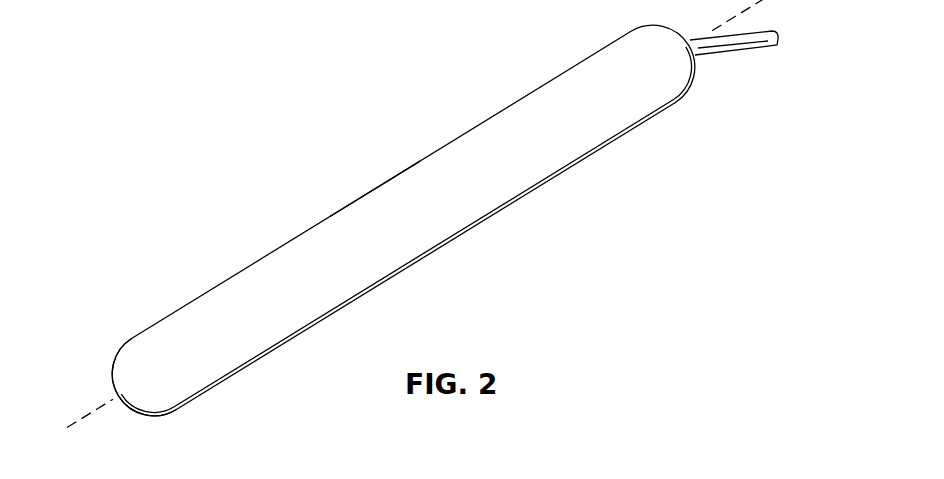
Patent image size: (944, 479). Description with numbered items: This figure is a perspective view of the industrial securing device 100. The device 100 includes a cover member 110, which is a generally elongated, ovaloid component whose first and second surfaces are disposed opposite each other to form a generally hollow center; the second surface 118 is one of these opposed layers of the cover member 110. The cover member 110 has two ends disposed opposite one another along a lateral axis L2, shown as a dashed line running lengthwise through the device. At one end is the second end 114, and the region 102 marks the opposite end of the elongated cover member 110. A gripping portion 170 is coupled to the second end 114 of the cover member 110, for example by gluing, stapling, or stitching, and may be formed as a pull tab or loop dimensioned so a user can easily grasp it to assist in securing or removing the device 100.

The industrial securing device 100 is at (320, 176).
The first end 102 is at (110, 363).
The cover member 110 is at (236, 274).
The second end 114 is at (668, 117).
The second surface 118 is at (455, 172).
The gripping portion 170 is at (778, 40).
The lateral axis L2 is at (397, 221).